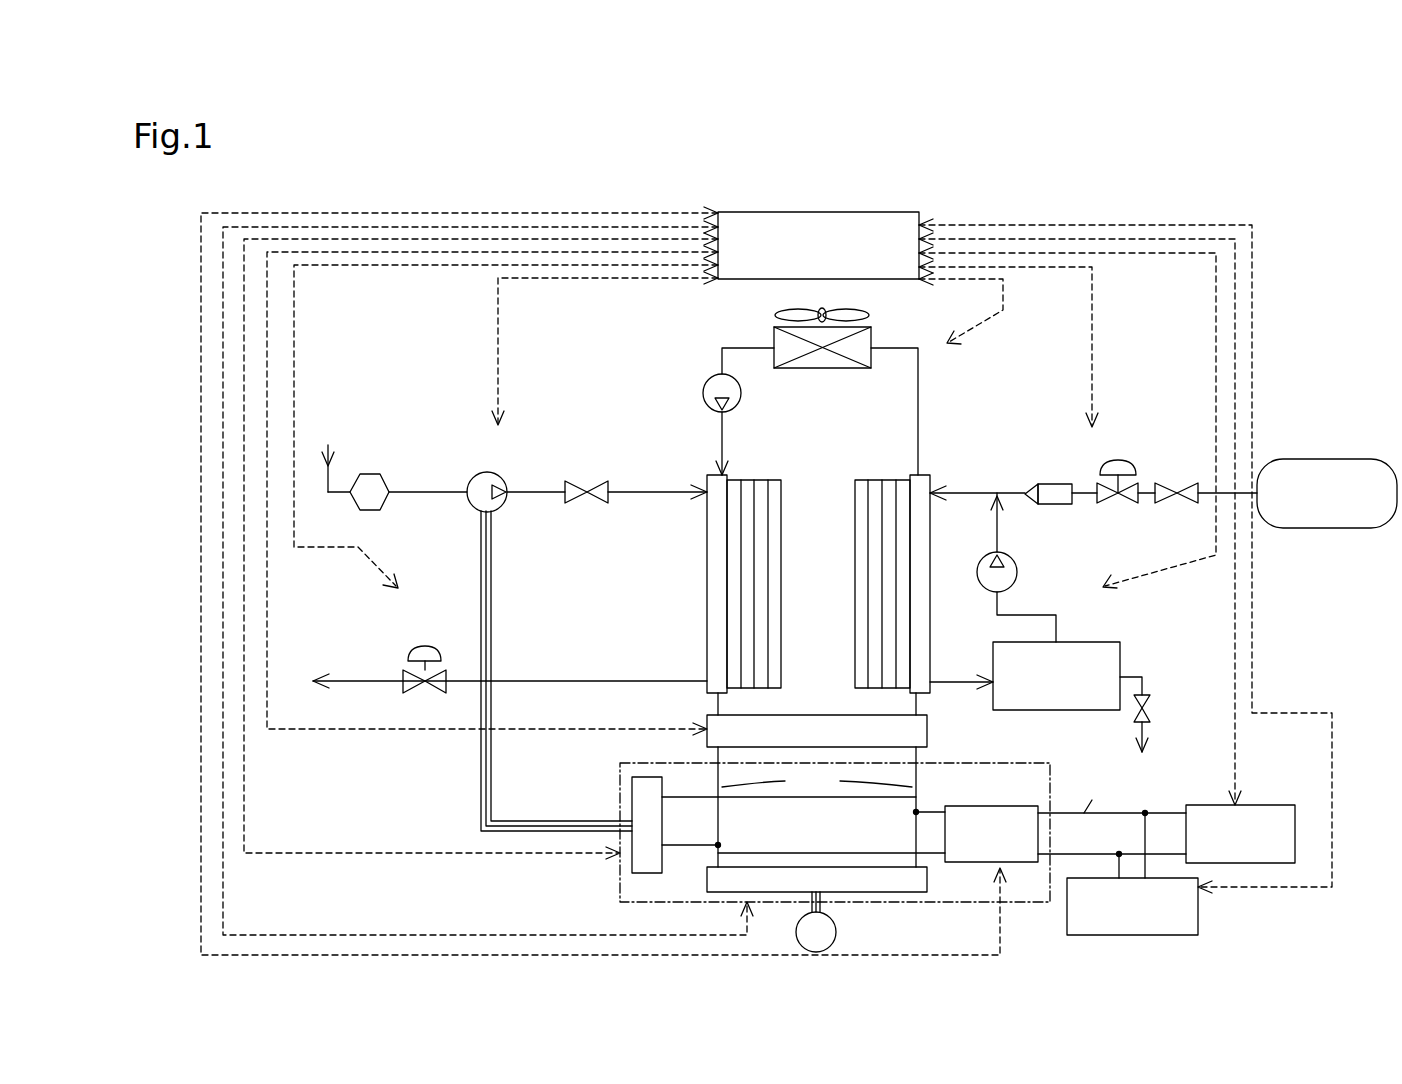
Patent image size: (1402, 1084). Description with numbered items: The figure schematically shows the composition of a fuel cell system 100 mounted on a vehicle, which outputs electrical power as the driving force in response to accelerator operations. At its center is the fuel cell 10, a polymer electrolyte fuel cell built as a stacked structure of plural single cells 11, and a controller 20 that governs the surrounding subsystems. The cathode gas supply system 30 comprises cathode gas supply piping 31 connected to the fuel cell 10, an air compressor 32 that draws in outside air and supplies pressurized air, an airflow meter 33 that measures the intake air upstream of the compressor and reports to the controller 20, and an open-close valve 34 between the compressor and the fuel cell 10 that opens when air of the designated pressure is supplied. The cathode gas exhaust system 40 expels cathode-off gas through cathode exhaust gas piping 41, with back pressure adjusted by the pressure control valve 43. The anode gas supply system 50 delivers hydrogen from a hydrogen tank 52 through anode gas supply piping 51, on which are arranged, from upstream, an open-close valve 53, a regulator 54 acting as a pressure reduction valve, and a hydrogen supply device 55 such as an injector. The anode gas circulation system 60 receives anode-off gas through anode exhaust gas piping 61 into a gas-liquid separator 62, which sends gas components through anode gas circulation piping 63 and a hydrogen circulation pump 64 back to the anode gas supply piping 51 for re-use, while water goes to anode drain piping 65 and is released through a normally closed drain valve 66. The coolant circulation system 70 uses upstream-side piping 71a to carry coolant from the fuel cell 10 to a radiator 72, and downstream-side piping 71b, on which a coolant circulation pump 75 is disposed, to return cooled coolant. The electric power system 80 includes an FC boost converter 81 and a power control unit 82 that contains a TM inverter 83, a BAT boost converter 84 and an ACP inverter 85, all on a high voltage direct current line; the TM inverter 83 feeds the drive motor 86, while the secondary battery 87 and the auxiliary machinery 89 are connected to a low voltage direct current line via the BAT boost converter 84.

The fuel cell system 100 is at (1388, 209).
The fuel cell 10 is at (818, 560).
The single cell 11 is at (757, 480).
The controller 20 is at (822, 212).
The cathode gas supply system 30 is at (507, 442).
The cathode gas supply piping 31 is at (447, 495).
The air compressor 32 is at (496, 473).
The airflow meter 33 is at (380, 475).
The open-close valve 34 is at (585, 482).
The cathode gas exhaust system 40 is at (493, 640).
The cathode exhaust gas piping 41 is at (370, 678).
The pressure control valve 43 is at (418, 650).
The anode gas supply system 50 is at (1163, 446).
The anode gas supply piping 51 is at (997, 490).
The hydrogen tank 52 is at (1313, 460).
The open-close valve 53 is at (1165, 483).
The regulator 54 is at (1118, 460).
The hydrogen supply device 55 is at (1048, 484).
The anode gas circulation system 60 is at (1070, 622).
The anode exhaust gas piping 61 is at (950, 680).
The gas-liquid separator 62 is at (1060, 712).
The anode gas circulation piping 63 is at (1061, 636).
The hydrogen circulation pump 64 is at (982, 560).
The anode drain piping 65 is at (1148, 700).
The drain valve 66 is at (1150, 726).
The coolant circulation system 70 is at (768, 382).
The upstream-side piping 71a is at (881, 348).
The downstream-side piping 71b is at (750, 348).
The radiator 72 is at (815, 370).
The coolant circulation pump 75 is at (705, 395).
The electric power system 80 is at (928, 731).
The FC boost converter 81 is at (927, 735).
The power control unit 82 is at (620, 783).
The TM inverter 83 is at (927, 882).
The BAT boost converter 84 is at (990, 806).
The ACP inverter 85 is at (648, 873).
The drive motor 86 is at (836, 932).
The secondary battery 87 is at (1295, 835).
The auxiliary machinery 89 is at (1198, 917).